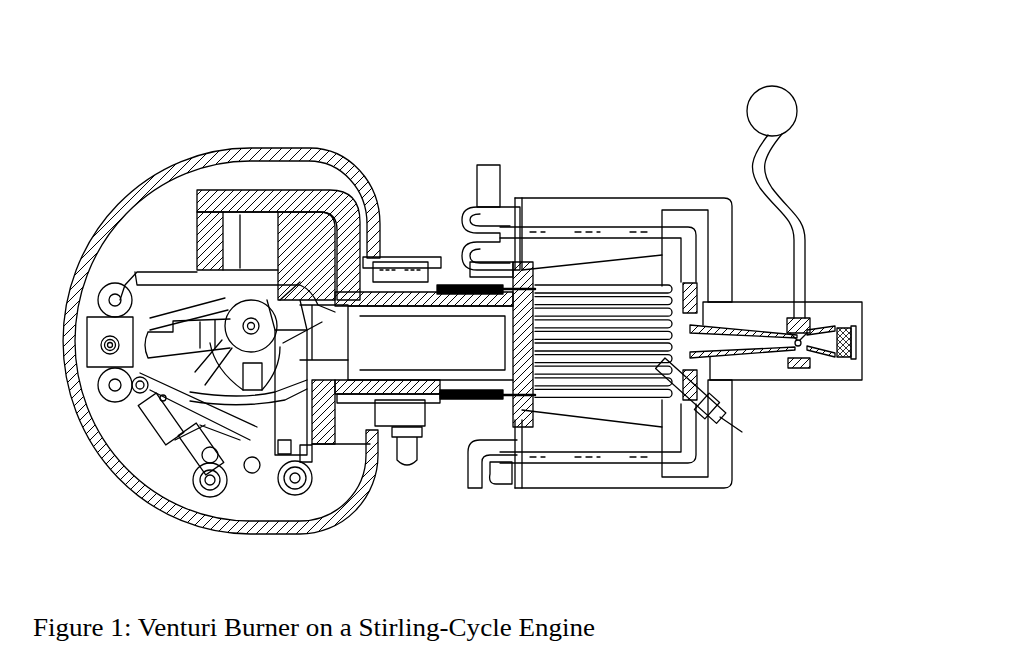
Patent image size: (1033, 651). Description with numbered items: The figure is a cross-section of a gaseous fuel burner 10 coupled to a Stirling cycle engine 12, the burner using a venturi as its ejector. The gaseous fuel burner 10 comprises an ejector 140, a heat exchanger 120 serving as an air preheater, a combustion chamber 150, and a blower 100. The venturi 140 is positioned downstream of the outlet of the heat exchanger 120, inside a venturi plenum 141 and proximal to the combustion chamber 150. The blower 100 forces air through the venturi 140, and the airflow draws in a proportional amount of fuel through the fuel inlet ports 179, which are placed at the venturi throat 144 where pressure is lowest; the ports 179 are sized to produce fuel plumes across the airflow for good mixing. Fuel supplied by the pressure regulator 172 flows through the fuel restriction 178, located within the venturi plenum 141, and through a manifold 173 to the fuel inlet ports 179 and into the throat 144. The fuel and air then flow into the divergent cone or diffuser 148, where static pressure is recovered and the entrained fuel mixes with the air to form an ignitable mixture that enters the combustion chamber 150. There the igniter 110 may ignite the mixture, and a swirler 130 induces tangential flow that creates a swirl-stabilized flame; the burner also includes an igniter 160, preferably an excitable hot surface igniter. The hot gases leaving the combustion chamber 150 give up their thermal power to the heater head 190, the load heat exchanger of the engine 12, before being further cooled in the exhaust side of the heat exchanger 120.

The gaseous fuel burner 10 is at (601, 276).
The Stirling cycle engine 12 is at (233, 89).
The blower 100 is at (485, 160).
The heat exchanger 120 is at (605, 227).
The combustion chamber 150 is at (650, 325).
The pressure regulator 172 is at (783, 113).
The fuel restriction 178 is at (775, 182).
The ejector 140 is at (817, 310).
The venturi plenum 141 is at (840, 303).
The swirler 130 is at (799, 333).
The venturi throat 144 is at (810, 355).
The fuel inlet ports 179 is at (803, 353).
The manifold 173 is at (800, 360).
The diffuser 148 is at (745, 352).
The igniter 110 is at (762, 450).
The igniter 160 is at (733, 453).
The heater head 190 is at (587, 397).